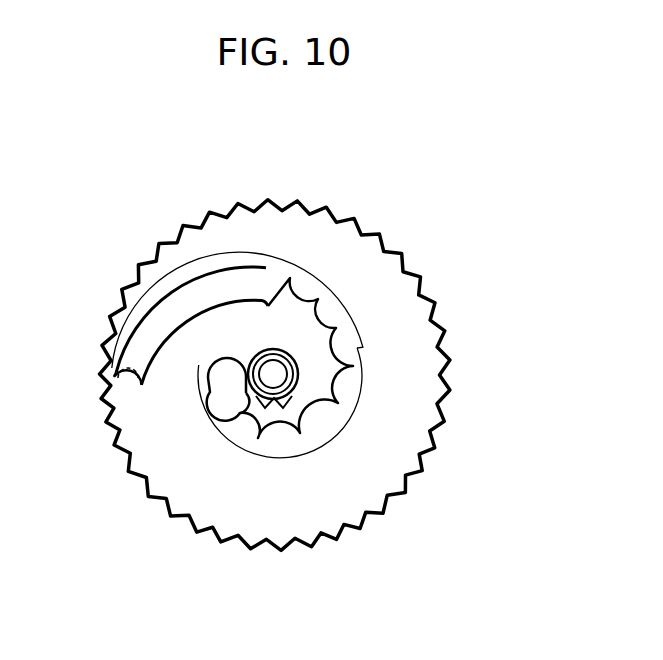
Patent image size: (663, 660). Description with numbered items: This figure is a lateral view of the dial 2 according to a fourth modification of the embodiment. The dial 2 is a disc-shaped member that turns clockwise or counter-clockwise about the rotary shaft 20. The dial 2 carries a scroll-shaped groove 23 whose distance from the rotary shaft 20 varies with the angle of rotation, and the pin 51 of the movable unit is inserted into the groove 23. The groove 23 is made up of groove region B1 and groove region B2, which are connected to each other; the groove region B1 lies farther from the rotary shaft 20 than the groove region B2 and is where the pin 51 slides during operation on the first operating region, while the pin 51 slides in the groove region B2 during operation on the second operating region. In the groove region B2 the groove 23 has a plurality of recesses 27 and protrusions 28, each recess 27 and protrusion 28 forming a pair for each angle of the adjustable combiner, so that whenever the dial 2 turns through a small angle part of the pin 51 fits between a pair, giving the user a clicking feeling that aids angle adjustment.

The dial 2 is at (397, 249).
The rotary shaft 20 is at (250, 378).
The groove 23 is at (315, 402).
The recess 27 is at (268, 302).
The protrusion 28 is at (281, 281).
The pin 51 is at (114, 386).
The groove region B1 is at (186, 260).
The groove region B2 is at (331, 291).